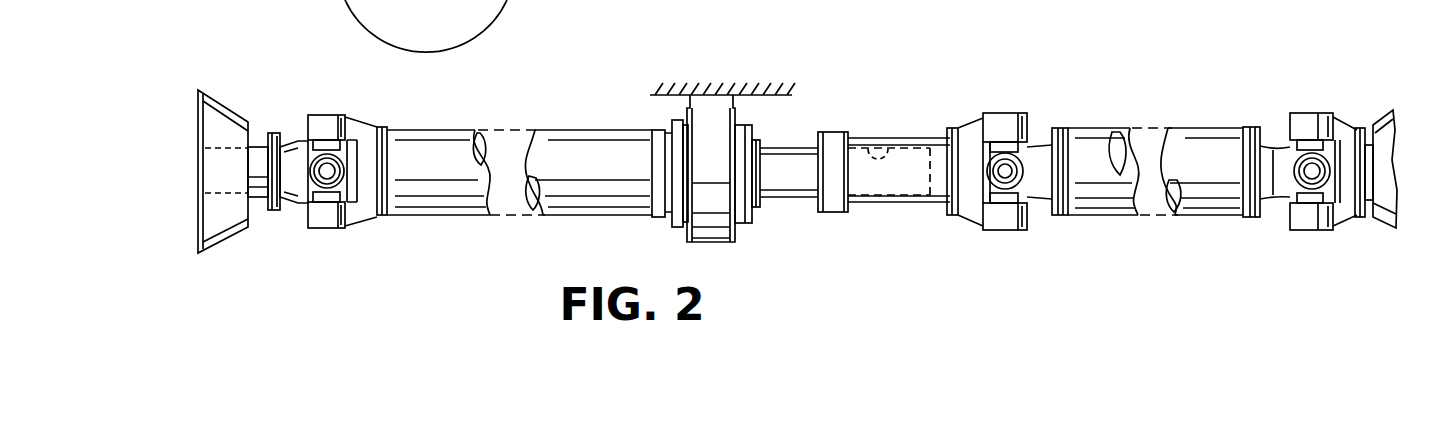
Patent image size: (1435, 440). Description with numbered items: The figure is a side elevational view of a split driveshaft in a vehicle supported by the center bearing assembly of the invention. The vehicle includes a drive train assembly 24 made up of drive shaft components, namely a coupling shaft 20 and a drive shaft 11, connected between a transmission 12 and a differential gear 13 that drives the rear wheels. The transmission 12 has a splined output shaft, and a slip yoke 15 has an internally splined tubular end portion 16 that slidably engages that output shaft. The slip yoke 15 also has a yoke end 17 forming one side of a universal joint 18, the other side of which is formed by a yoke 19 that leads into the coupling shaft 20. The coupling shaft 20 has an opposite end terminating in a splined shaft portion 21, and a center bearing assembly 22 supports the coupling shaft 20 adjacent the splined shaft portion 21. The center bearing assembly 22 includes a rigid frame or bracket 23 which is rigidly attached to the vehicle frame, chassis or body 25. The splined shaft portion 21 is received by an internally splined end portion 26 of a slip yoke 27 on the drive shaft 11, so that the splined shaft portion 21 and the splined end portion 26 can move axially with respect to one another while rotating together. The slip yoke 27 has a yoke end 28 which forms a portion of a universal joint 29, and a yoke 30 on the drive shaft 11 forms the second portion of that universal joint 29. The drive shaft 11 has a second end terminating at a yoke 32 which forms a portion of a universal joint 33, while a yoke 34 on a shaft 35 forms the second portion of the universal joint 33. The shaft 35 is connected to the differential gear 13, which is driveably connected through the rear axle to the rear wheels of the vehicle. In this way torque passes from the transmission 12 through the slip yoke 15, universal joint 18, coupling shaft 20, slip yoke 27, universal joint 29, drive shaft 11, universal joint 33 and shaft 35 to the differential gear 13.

The drive shaft 11 is at (1101, 127).
The transmission 12 is at (234, 117).
The differential gear 13 is at (1380, 224).
The slip yoke 15 is at (276, 214).
The internally splined tubular end portion 16 is at (258, 198).
The yoke end 17 is at (300, 204).
The universal joint 18 is at (325, 112).
The yoke 19 is at (364, 126).
The coupling shaft 20 is at (426, 220).
The splined shaft portion 21 is at (884, 196).
The center bearing assembly 22 is at (745, 246).
The rigid frame or bracket 23 is at (752, 136).
The drive train assembly 24 is at (1252, 60).
The vehicle frame, chassis or body 25 is at (655, 97).
The internally splined end portion 26 is at (886, 152).
The slip yoke 27 is at (912, 138).
The yoke end 28 is at (970, 121).
The universal joint 29 is at (1012, 238).
The yoke 30 is at (1042, 130).
The yoke 32 is at (1274, 201).
The universal joint 33 is at (1310, 234).
The yoke 34 is at (1311, 113).
The shaft 35 is at (1370, 147).